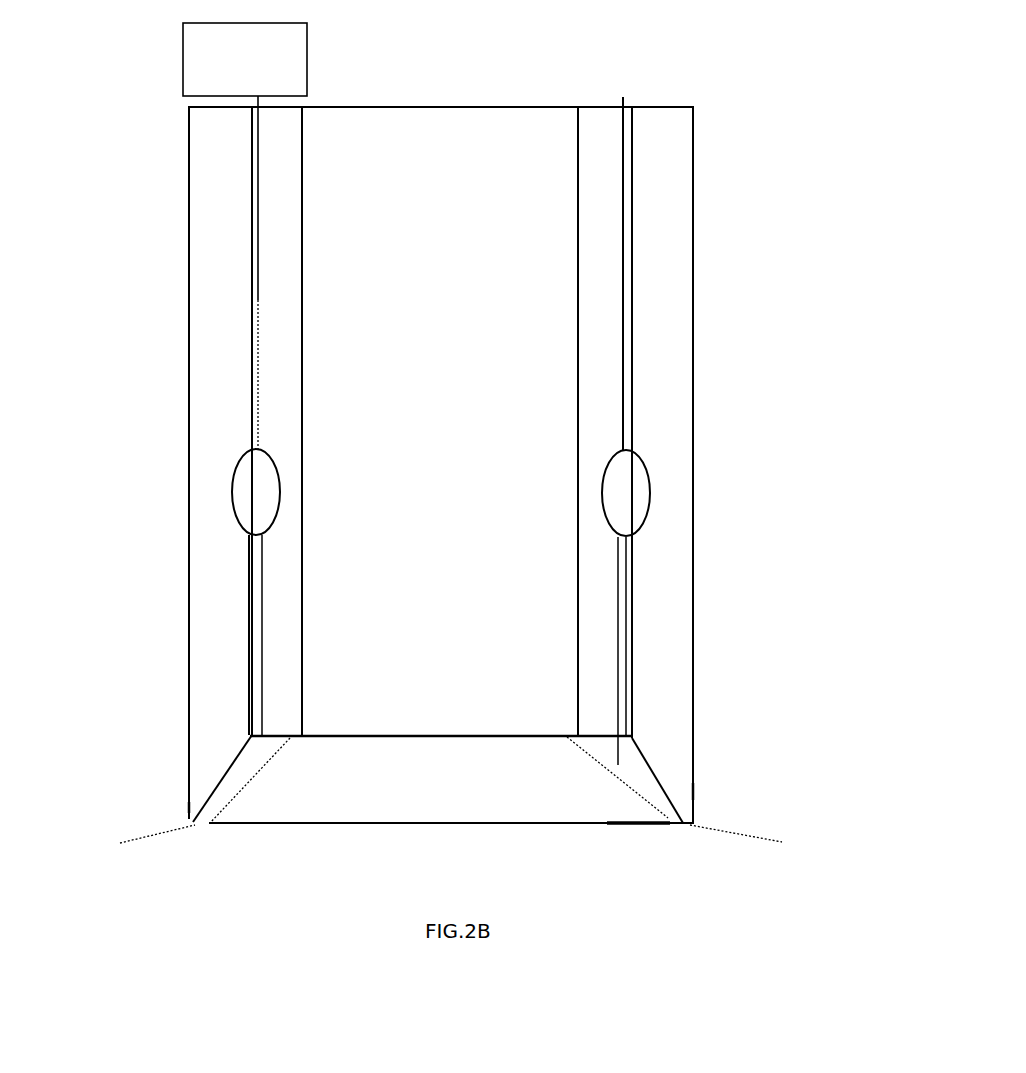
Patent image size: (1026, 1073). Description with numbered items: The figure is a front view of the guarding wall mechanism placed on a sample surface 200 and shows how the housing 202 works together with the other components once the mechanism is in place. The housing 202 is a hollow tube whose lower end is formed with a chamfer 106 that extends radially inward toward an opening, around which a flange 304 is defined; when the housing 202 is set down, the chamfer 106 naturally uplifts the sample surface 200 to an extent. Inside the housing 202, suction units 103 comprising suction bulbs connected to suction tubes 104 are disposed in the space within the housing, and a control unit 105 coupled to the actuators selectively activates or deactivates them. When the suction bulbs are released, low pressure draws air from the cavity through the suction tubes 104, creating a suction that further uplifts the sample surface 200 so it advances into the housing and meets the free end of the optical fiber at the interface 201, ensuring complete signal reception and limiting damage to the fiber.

The control unit 105 is at (183, 66).
The housing 202 is at (688, 249).
The suction unit 103 is at (645, 472).
The suction tube 104 is at (617, 627).
The chamfer 106 is at (663, 790).
The interface of the free end of the optical fiber and sample surface 201 is at (386, 733).
The flange 304 is at (273, 735).
The sample surface 200 is at (247, 803).